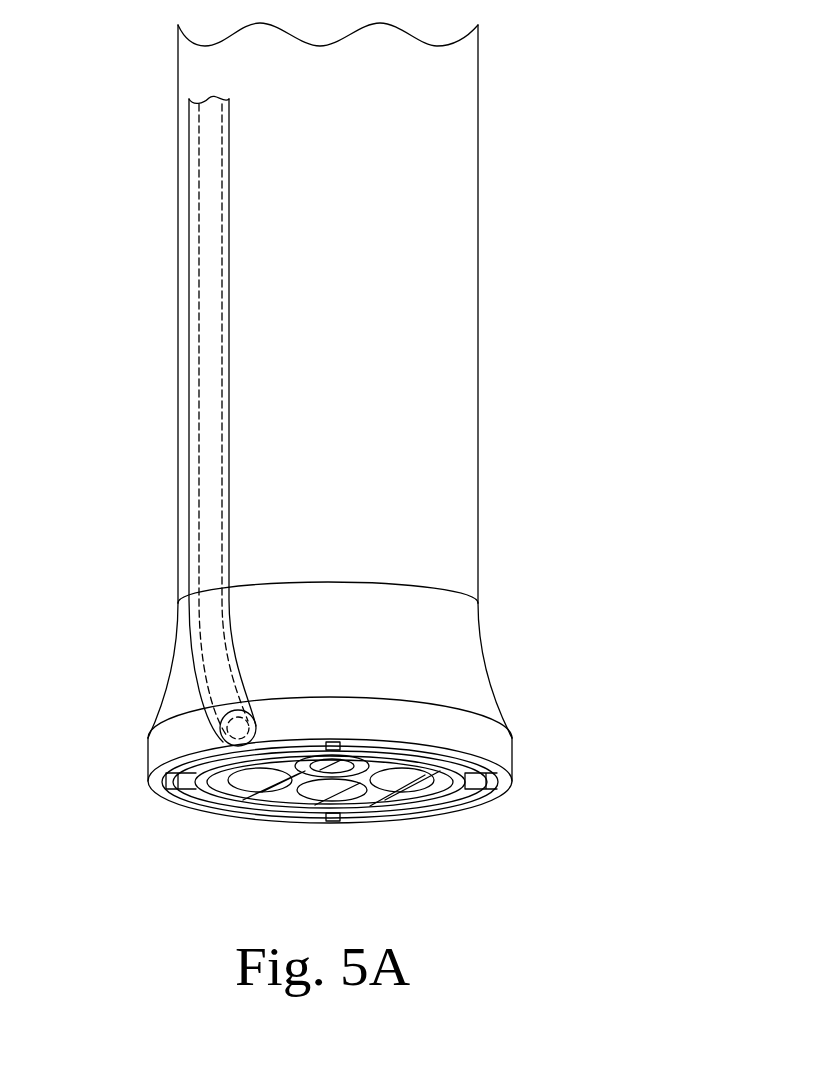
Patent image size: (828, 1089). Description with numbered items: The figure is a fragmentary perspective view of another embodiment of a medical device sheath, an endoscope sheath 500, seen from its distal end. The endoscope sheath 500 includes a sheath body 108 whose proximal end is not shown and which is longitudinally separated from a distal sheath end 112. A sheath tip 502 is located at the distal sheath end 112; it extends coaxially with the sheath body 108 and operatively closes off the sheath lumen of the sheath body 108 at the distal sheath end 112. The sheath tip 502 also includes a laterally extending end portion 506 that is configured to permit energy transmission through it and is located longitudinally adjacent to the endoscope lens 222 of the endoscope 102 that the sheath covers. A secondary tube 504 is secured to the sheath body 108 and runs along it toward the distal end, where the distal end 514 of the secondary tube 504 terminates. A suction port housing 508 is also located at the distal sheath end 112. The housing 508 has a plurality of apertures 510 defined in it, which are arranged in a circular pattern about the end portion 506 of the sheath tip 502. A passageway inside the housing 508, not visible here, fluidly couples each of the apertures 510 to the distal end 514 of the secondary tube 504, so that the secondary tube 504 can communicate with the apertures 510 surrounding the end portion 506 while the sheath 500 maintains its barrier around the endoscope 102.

The endoscope sheath 500 is at (539, 124).
The sheath body 108 is at (463, 275).
The secondary tube 504 is at (190, 357).
The distal end of the secondary tube 514 is at (218, 735).
The distal sheath end 112 is at (536, 545).
The sheath tip 502 is at (472, 662).
The suction port housing 508 is at (508, 752).
The end portion 506 is at (458, 806).
The endoscope 102 is at (427, 805).
The endoscope lens 222 is at (340, 773).
The apertures 510 is at (184, 792).